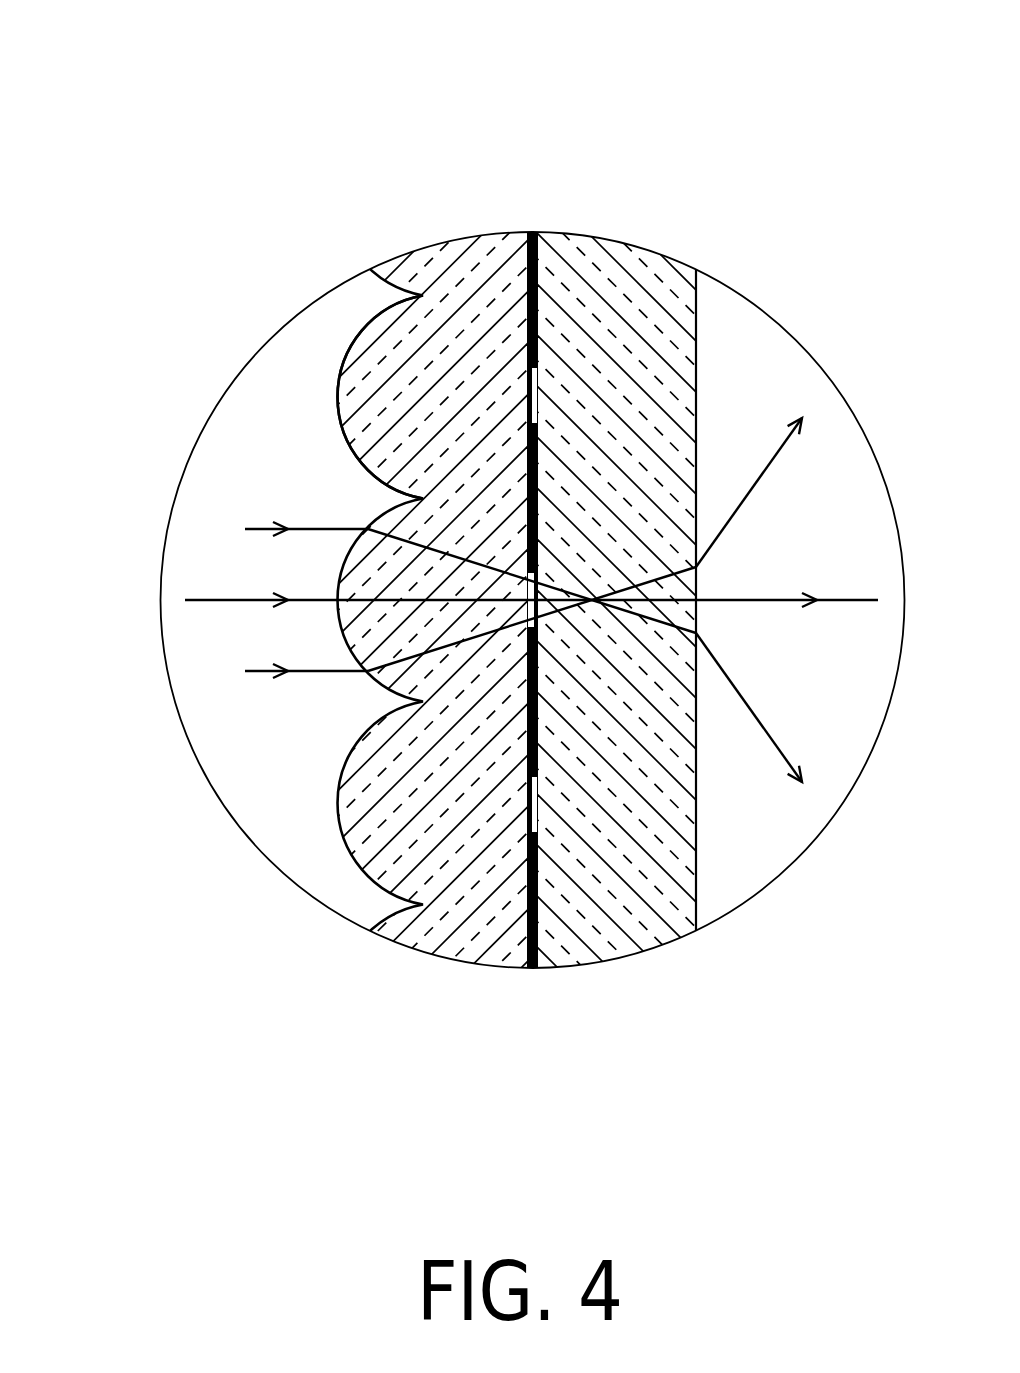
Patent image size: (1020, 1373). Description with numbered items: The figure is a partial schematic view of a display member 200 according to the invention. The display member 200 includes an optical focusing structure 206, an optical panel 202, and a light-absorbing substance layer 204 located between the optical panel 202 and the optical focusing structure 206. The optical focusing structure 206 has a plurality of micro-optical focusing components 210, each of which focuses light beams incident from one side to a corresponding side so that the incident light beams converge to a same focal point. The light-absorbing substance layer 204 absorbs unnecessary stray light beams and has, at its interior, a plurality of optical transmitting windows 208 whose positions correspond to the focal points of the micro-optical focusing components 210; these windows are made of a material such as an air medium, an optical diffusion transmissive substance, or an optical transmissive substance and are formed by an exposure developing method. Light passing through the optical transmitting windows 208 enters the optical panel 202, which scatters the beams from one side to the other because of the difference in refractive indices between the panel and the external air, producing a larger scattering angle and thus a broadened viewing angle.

The display member 200 is at (115, 47).
The optical panel 202 is at (620, 876).
The light-absorbing substance layer 204 is at (530, 968).
The optical focusing structure 206 is at (470, 845).
The optical transmitting windows 208 is at (535, 405).
The micro-optical focusing components 210 is at (371, 408).